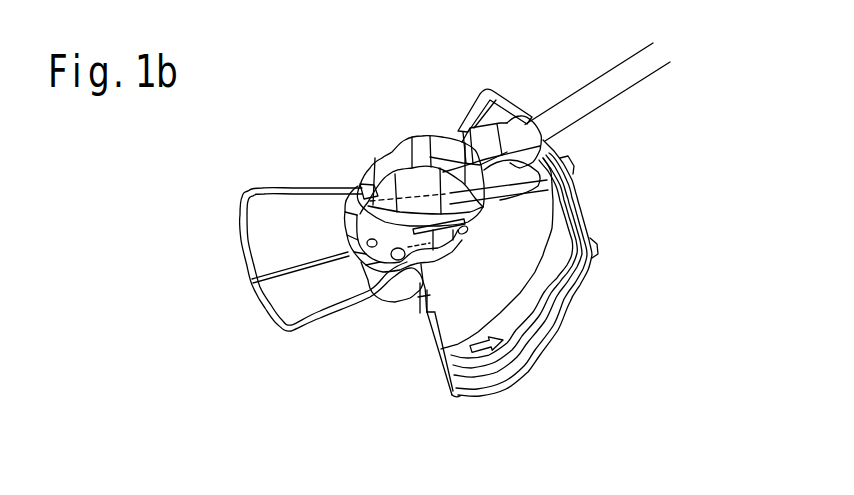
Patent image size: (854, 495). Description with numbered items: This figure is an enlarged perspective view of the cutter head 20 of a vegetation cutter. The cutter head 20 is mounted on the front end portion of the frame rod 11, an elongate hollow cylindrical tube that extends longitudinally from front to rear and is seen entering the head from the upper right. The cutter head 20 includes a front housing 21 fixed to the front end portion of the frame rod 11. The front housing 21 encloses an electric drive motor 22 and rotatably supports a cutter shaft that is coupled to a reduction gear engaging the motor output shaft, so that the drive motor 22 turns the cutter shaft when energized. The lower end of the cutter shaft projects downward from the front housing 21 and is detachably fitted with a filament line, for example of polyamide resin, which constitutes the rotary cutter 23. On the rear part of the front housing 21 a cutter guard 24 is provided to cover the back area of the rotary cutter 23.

The frame rod 11 is at (570, 98).
The cutter head 20 is at (380, 126).
The front housing 21 is at (392, 162).
The drive motor 22 is at (356, 178).
The rotary cutter 23 is at (311, 264).
The cutter guard 24 is at (533, 303).